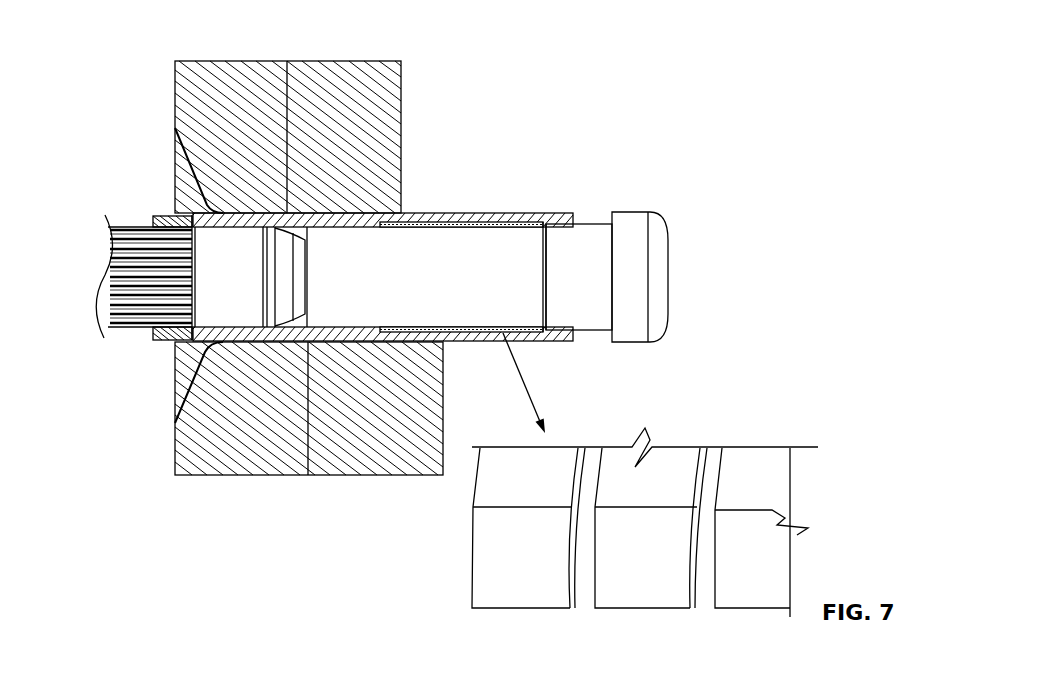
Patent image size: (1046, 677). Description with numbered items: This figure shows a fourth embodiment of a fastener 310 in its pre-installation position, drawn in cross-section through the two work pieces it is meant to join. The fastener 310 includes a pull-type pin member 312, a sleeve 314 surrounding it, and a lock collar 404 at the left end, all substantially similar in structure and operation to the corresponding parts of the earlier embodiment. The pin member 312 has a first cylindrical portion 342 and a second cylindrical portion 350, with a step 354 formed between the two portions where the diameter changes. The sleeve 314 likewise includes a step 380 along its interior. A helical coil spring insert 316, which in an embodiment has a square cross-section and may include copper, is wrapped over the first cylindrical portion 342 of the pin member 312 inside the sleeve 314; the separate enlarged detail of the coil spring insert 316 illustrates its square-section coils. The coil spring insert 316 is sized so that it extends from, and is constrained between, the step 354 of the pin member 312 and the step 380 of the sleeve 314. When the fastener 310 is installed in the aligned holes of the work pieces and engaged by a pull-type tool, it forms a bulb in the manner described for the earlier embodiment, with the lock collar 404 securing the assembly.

The fastener 310 is at (117, 48).
The pin member 312 is at (670, 277).
The sleeve 314 is at (498, 212).
The helical coil spring insert 316 is at (452, 221).
The first cylindrical portion 342 is at (367, 307).
The second cylindrical portion 350 is at (593, 238).
The step 354 is at (545, 221).
The step 380 is at (380, 341).
The lock collar 404 is at (156, 215).